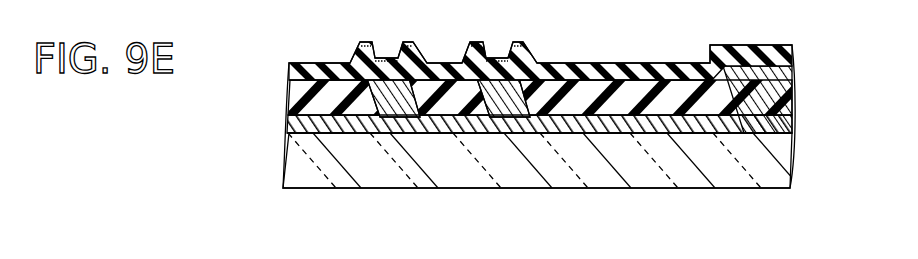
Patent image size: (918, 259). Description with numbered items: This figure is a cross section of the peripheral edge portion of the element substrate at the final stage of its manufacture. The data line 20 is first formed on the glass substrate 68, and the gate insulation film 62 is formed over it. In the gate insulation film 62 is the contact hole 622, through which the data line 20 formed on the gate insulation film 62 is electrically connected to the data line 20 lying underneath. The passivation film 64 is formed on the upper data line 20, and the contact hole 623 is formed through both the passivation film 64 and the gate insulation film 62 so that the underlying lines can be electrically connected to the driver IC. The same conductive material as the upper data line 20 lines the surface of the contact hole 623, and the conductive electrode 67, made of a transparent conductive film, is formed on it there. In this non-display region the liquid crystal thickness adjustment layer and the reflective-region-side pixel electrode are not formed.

The data line 20 is at (313, 132).
The gate insulation film 62 is at (292, 104).
The passivation film 64 is at (291, 69).
The conductive electrode 67 is at (358, 43).
The glass substrate 68 is at (293, 163).
The contact hole 622 is at (750, 93).
The contact hole 623 is at (392, 128).